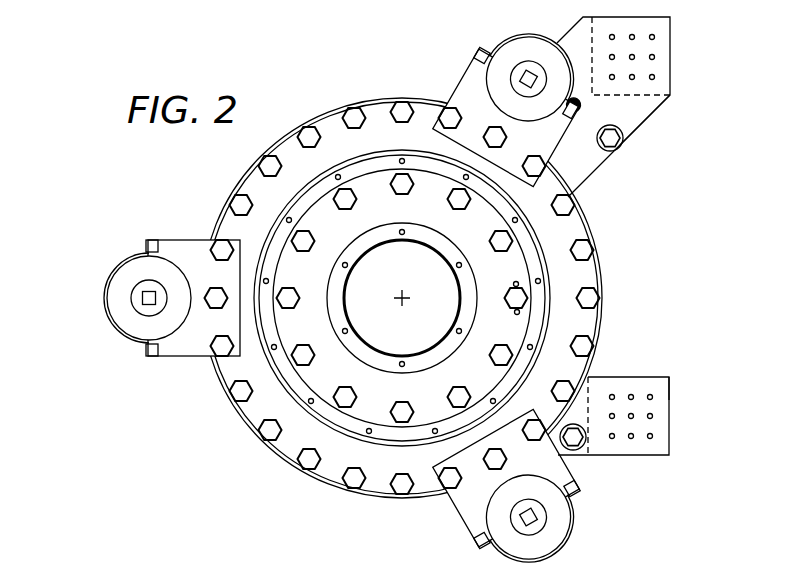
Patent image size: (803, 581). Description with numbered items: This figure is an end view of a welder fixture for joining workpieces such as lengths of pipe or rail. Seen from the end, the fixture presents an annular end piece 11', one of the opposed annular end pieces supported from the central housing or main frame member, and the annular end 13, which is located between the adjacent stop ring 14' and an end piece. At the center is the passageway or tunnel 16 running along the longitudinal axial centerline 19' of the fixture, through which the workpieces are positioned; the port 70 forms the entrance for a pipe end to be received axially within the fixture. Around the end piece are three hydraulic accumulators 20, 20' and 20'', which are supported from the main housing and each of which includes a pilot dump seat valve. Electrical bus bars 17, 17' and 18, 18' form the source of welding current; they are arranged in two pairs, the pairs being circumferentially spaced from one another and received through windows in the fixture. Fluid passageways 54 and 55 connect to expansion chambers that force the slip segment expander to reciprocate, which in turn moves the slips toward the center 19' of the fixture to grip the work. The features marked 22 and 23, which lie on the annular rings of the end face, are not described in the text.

The annular end piece 11' is at (382, 298).
The annular end 13 is at (318, 408).
The stop ring 14' is at (402, 298).
The passageway or tunnel 16 is at (446, 323).
The electrical bus bar 17 is at (635, 107).
The electrical bus bar 17' is at (656, 144).
The electrical bus bar 18 is at (620, 389).
The electrical bus bar 18' is at (707, 371).
The longitudinal axial centerline 19' is at (417, 280).
The hydraulic accumulator 20 is at (146, 298).
The hydraulic accumulator 20' is at (541, 495).
The hydraulic accumulator 20'' is at (502, 99).
The intermediate ring 22 is at (552, 329).
The ring shoulder 23 is at (545, 298).
The fluid passageway 54 is at (515, 282).
The fluid passageway 55 is at (515, 314).
The port 70 is at (369, 252).